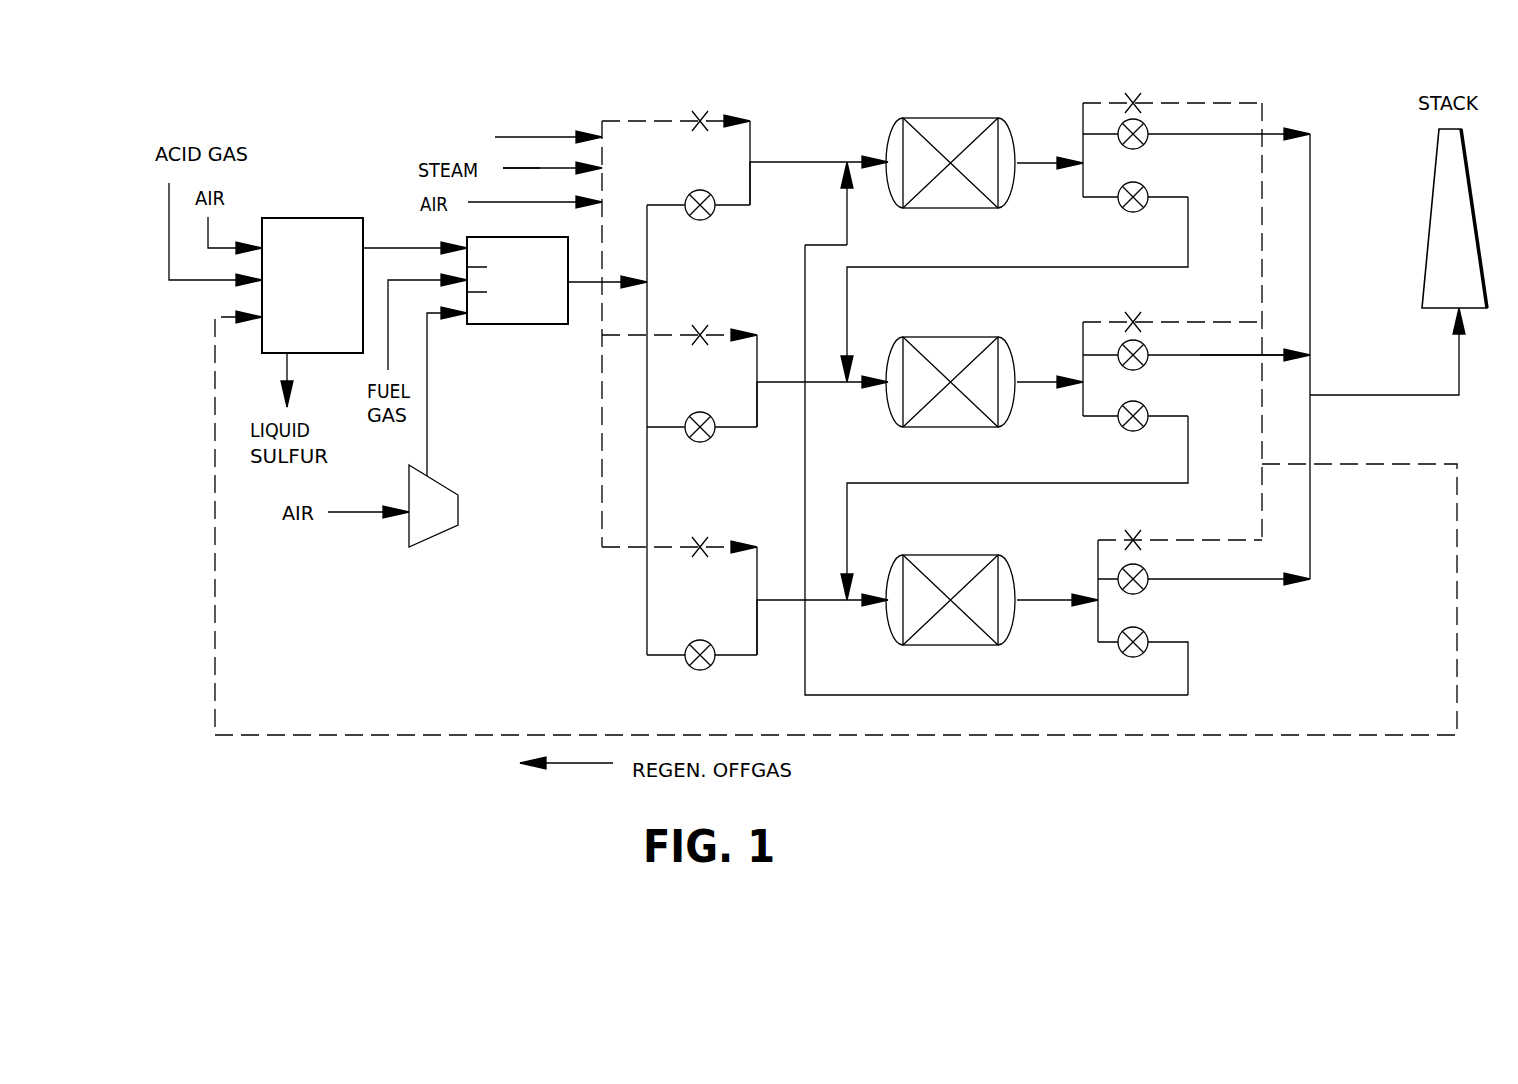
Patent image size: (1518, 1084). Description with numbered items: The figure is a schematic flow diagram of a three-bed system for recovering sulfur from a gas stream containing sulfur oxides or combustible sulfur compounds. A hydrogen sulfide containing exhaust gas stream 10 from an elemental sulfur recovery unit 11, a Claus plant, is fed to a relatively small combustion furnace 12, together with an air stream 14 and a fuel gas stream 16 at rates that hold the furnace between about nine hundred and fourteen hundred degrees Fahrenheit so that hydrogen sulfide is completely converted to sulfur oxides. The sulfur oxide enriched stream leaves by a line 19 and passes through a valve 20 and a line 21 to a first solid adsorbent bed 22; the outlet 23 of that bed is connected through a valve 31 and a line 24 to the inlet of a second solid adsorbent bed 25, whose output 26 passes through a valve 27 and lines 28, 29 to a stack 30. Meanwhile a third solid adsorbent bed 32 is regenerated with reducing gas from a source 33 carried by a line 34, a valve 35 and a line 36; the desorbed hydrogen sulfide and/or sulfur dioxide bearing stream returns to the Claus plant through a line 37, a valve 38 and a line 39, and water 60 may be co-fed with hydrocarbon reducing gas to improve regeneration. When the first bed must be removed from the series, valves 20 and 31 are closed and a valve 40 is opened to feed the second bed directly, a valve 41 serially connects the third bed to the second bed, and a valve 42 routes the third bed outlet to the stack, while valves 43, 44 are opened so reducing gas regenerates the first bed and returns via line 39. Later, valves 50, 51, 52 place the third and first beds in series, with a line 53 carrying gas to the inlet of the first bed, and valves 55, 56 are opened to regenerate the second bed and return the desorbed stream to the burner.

The hydrogen sulfide containing exhaust gas stream 10 is at (379, 246).
The elemental sulfur recovery unit 11 is at (312, 218).
The combustion furnace 12 is at (548, 325).
The air stream 14 is at (348, 513).
The fuel gas stream 16 is at (389, 303).
The line 19 is at (597, 264).
The valve 20 is at (702, 220).
The line 21 is at (783, 161).
The first solid adsorbent bed 22 is at (948, 117).
The outlet 23 is at (1033, 161).
The line 24 is at (986, 266).
The second solid adsorbent bed 25 is at (945, 337).
The output 26 is at (1035, 380).
The valve 27 is at (1142, 368).
The line 28 is at (1203, 357).
The line 29 is at (1352, 394).
The stack 30 is at (1423, 268).
The valve 31 is at (1125, 211).
The third solid adsorbent bed 32 is at (948, 555).
The source of reducing gas 33 is at (527, 135).
The line 34 is at (602, 489).
The valve 35 is at (703, 535).
The line 36 is at (817, 602).
The line 37 is at (1040, 598).
The valve 38 is at (1136, 536).
The line 39 is at (1325, 735).
The valve 40 is at (700, 442).
The valve 41 is at (1125, 430).
The valve 42 is at (1142, 592).
The valve 43 is at (704, 110).
The valve 44 is at (1136, 100).
The valve 50 is at (700, 670).
The valve 51 is at (1125, 656).
The valve 52 is at (1142, 147).
The line 53 is at (808, 447).
The valve 55 is at (703, 323).
The valve 56 is at (1135, 318).
The water 60 is at (515, 166).